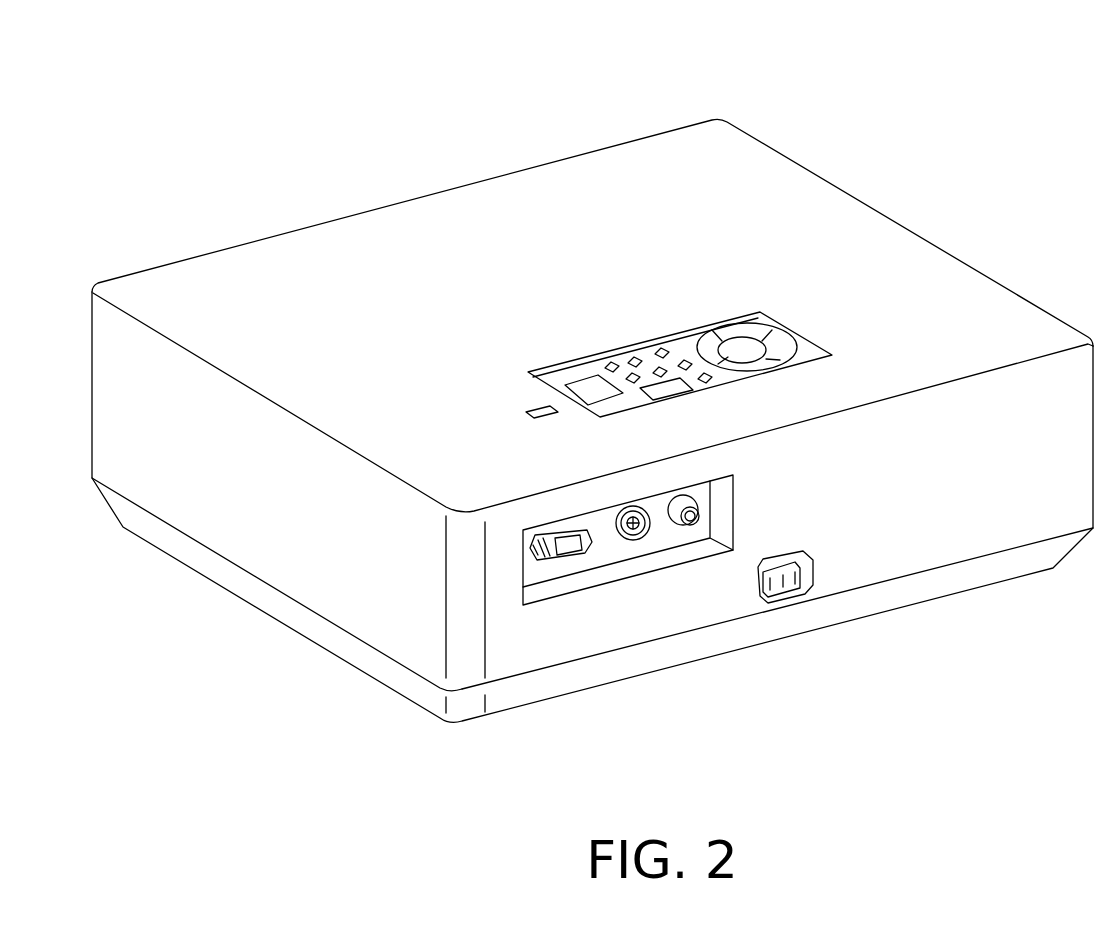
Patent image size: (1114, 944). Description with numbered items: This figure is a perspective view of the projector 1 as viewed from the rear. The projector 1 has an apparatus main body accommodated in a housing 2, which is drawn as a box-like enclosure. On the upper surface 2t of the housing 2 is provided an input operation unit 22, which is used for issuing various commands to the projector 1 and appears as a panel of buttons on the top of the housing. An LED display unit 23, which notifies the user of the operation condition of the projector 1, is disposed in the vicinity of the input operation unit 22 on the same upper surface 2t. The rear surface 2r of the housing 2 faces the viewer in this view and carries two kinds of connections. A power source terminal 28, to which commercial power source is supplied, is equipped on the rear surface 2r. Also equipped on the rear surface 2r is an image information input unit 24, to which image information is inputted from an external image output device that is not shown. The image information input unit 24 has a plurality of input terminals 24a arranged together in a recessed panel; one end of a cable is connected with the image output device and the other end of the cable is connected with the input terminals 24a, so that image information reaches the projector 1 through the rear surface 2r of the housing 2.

The projector 1 is at (862, 98).
The housing 2 is at (307, 248).
The upper surface 2t is at (458, 205).
The rear surface 2r is at (988, 525).
The input operation unit 22 is at (573, 367).
The LED display unit 23 is at (537, 400).
The image information input unit 24 is at (540, 573).
The input terminals 24a is at (573, 548).
The power source terminal 28 is at (807, 597).